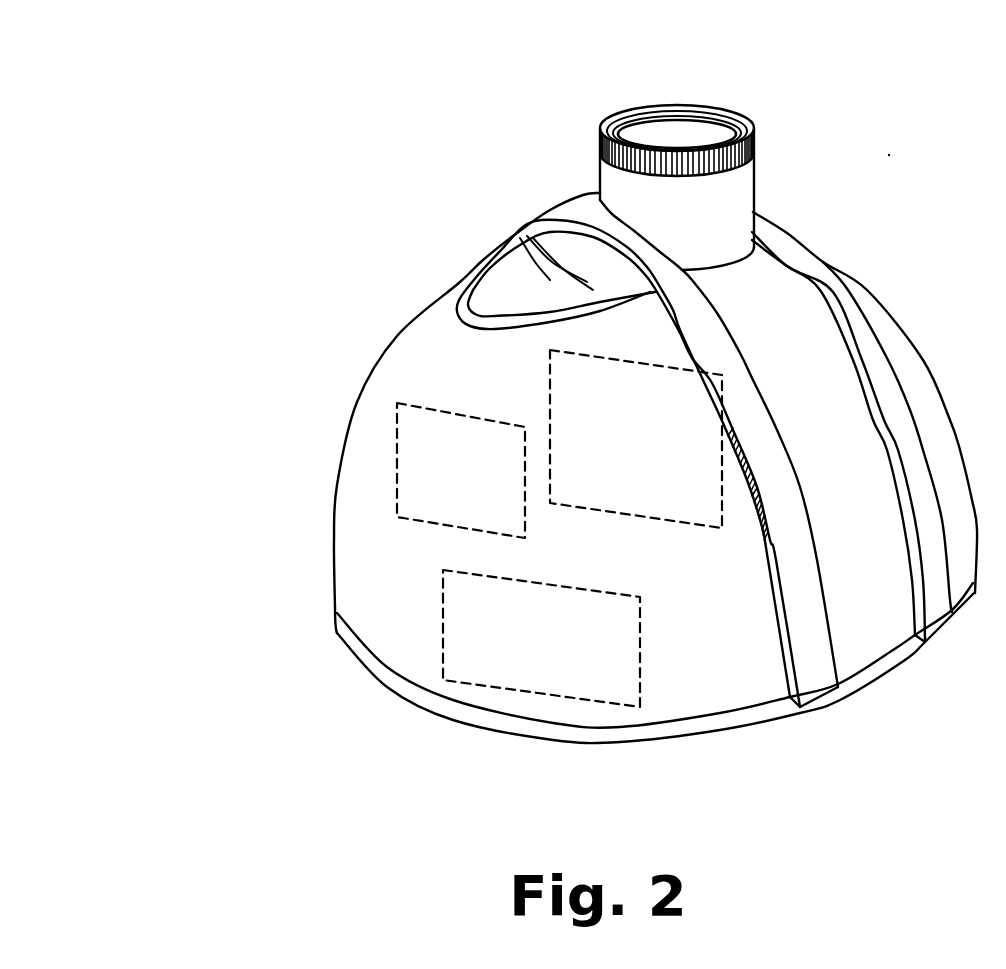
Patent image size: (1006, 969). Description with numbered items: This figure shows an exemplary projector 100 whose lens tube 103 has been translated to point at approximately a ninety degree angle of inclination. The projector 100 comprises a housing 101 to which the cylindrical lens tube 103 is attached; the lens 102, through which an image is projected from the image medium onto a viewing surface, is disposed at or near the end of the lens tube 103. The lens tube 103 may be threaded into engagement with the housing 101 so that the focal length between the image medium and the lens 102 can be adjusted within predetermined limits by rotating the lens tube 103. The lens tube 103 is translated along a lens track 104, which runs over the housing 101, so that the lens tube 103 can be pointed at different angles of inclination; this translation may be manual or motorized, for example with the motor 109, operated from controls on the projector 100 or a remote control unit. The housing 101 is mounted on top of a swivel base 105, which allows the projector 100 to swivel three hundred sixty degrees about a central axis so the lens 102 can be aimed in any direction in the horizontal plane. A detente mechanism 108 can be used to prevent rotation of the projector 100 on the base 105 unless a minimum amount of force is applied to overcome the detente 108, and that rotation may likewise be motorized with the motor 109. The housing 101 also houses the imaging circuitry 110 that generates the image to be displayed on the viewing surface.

The projector 100 is at (350, 328).
The housing 101 is at (375, 545).
The lens 102 is at (673, 143).
The lens tube 103 is at (708, 217).
The lens track 104 is at (707, 332).
The swivel base 105 is at (630, 730).
The detente mechanism 108 is at (541, 638).
The motor 109 is at (636, 439).
The circuitry 110 is at (461, 470).